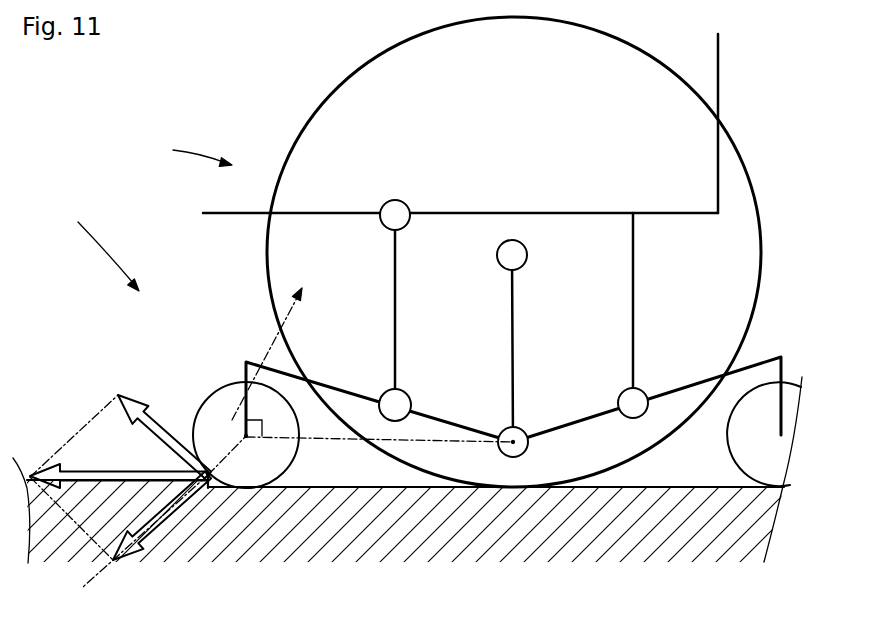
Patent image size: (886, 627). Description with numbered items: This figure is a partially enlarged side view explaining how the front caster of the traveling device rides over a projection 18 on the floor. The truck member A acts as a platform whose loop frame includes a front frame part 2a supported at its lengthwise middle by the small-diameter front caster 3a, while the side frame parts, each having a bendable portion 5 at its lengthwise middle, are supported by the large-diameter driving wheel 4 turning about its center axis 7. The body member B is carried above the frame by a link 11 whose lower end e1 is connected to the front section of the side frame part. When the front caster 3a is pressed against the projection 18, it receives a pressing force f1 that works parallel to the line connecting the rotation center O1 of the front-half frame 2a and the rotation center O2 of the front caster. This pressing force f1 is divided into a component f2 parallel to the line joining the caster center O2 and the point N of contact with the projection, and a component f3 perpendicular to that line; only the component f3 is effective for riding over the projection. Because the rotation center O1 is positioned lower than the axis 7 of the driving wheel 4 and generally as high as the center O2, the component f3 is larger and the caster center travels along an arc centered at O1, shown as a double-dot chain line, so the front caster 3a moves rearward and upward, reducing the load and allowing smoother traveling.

The driving wheel 4 is at (307, 127).
The center axis of the driving wheel 7 is at (515, 240).
The link 11 is at (395, 287).
The front frame part 2a is at (356, 400).
The front caster 3a is at (225, 387).
The bendable portion 5 is at (513, 457).
The projection 18 is at (210, 479).
The lower end of the link e1 is at (402, 420).
The rotation center of the front-half frame O1 is at (541, 461).
The rotation center of the front caster O2 is at (267, 455).
The point of contact to the projection N is at (210, 459).
The pressing force f1 is at (33, 470).
The force component parallel to line O2N f2 is at (160, 527).
The force component vertical to line O2N f3 is at (123, 396).
The truck member A is at (102, 245).
The body member B is at (193, 150).